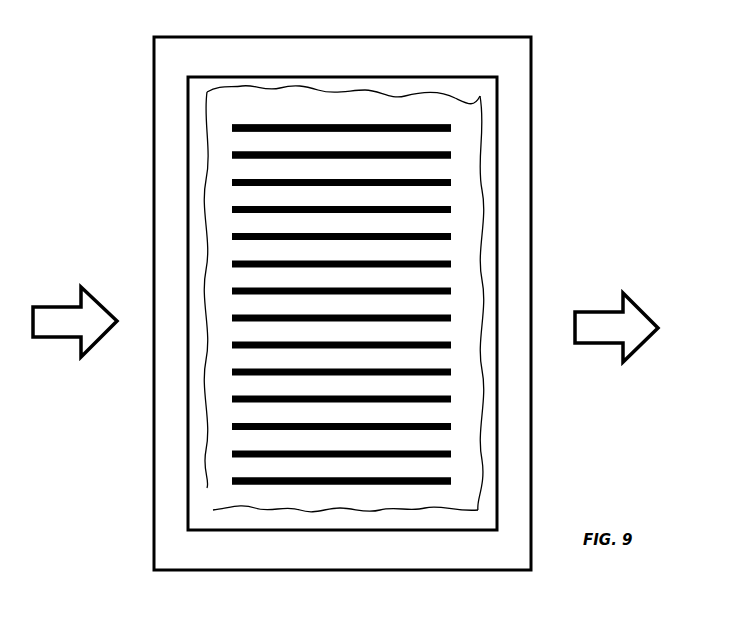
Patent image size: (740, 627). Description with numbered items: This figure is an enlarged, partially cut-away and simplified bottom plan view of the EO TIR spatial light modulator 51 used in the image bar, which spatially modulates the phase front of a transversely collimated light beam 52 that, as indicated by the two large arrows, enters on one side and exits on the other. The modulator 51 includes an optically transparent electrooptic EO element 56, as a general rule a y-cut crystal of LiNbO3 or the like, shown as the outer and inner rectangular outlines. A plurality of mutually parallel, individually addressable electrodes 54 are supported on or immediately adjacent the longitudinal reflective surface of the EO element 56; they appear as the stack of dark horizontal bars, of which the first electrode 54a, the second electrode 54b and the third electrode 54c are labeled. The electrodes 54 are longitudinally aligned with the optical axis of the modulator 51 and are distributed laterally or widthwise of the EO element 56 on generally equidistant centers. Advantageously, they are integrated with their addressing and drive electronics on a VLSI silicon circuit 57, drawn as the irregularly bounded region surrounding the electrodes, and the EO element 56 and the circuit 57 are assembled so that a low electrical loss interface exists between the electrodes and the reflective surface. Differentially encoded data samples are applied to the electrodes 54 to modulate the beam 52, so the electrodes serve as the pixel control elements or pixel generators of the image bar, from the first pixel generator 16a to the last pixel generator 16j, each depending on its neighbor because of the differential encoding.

The EO TIR spatial light modulator 51 is at (151, 50).
The light beam 52 is at (53, 307).
The electrodes 54 is at (370, 543).
The electrode 54a is at (367, 128).
The electrode 54b is at (276, 150).
The electrode 54c is at (400, 175).
The pixel generator 16a is at (403, 135).
The pixel generator 16j is at (426, 470).
The EO element 56 is at (153, 470).
The VLSI silicon circuit 57 is at (197, 168).